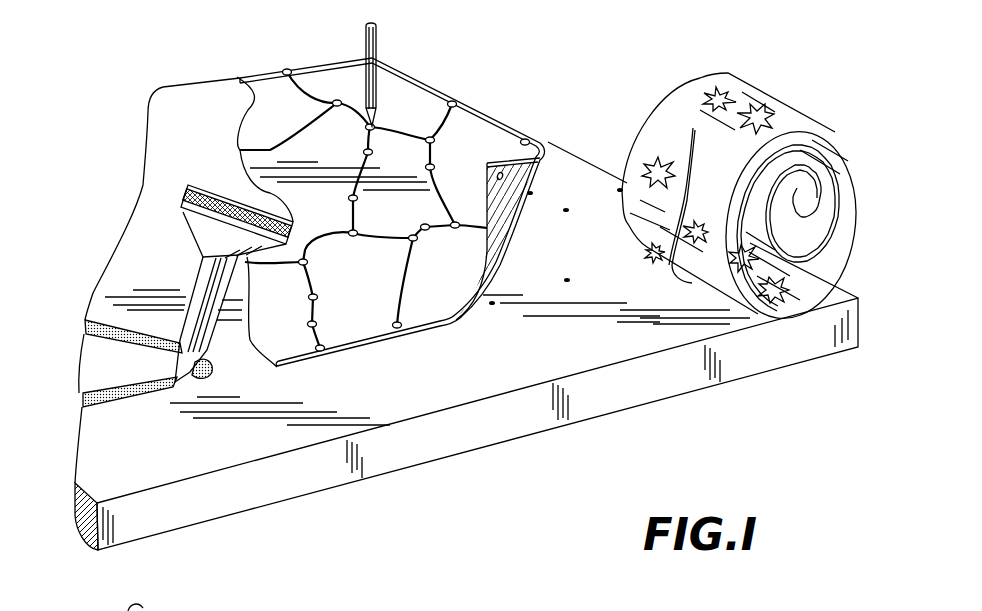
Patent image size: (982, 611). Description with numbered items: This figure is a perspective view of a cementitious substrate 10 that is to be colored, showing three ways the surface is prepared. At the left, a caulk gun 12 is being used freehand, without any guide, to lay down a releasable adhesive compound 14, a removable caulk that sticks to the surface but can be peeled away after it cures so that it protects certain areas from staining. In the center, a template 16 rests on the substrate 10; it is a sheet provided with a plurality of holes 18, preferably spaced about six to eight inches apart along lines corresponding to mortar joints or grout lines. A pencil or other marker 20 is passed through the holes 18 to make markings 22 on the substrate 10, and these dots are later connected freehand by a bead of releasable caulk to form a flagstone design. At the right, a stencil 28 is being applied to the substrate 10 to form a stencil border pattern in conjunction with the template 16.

The cementitious substrate 10 is at (605, 422).
The caulk gun 12 is at (194, 283).
The releasable adhesive compound 14 is at (102, 402).
The template 16 is at (546, 141).
The holes 18 is at (316, 325).
The pencil or other marker 20 is at (378, 47).
The markings 22 is at (569, 279).
The stencil 28 is at (708, 75).